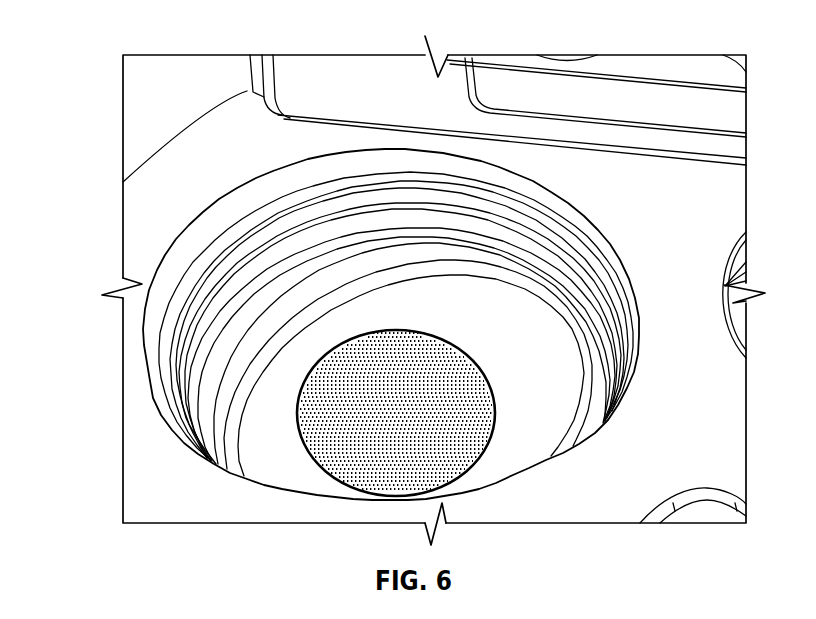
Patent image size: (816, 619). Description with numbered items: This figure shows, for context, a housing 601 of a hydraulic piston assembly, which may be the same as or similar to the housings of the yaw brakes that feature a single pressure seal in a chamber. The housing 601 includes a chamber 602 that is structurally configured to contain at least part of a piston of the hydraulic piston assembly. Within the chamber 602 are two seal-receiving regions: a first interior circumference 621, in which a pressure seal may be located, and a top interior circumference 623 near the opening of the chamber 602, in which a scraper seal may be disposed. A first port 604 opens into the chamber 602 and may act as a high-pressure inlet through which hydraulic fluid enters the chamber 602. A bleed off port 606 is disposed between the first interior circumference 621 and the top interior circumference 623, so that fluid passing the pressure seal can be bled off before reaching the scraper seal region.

The housing 601 is at (128, 40).
The chamber 602 is at (555, 400).
The first port 604 is at (422, 273).
The bleed off port 606 is at (420, 198).
The first interior circumference 621 is at (504, 247).
The top interior circumference 623 is at (394, 170).